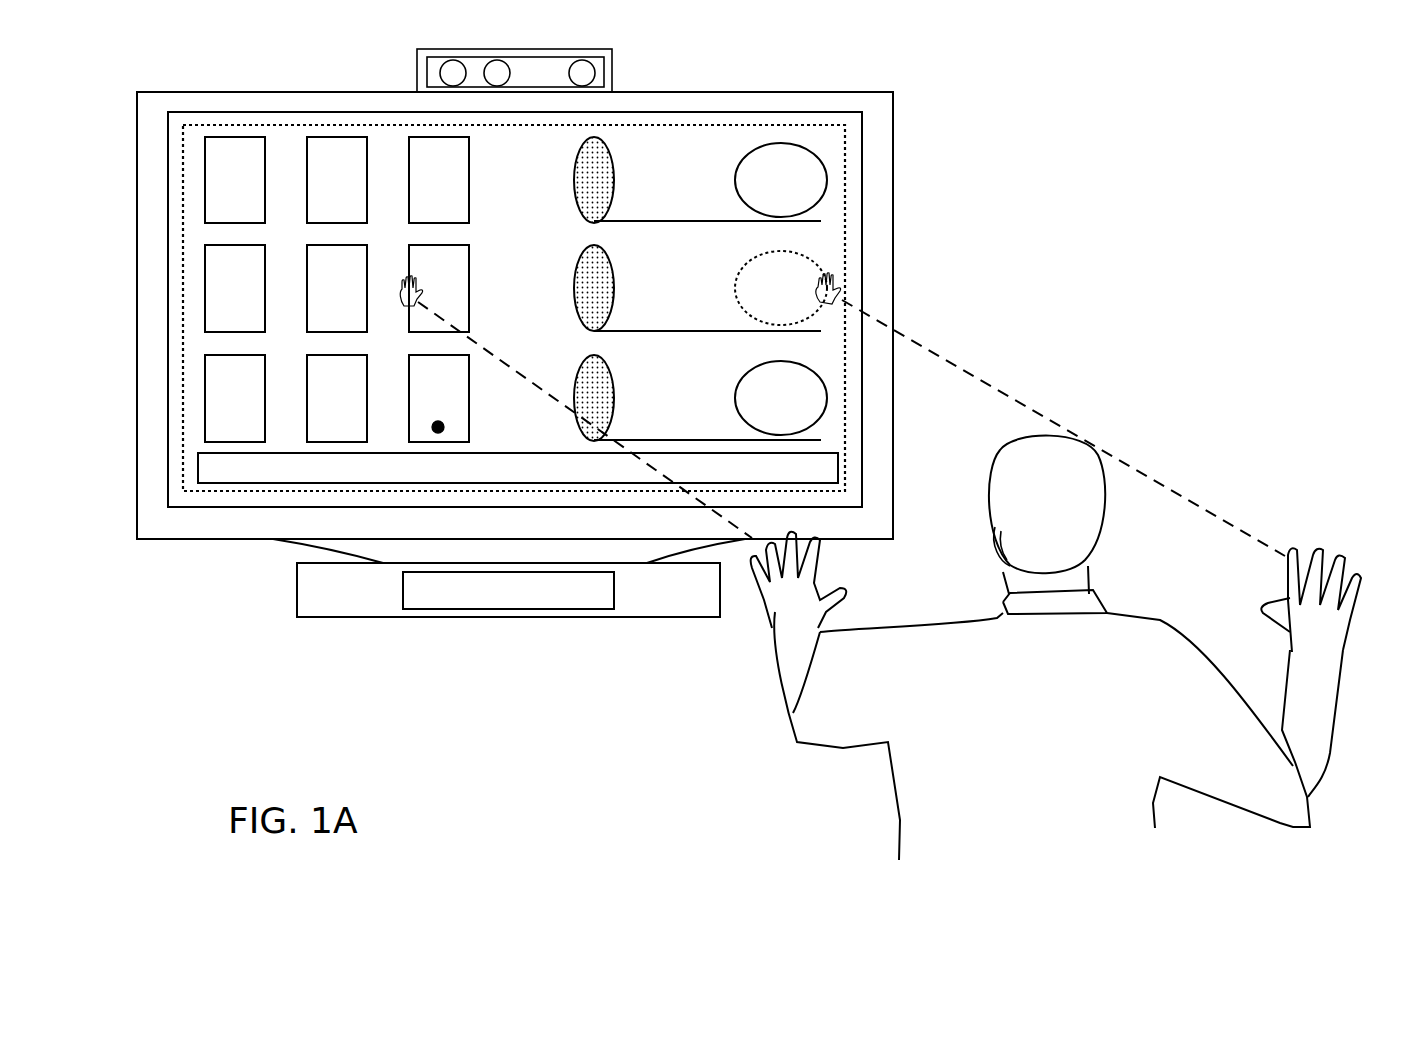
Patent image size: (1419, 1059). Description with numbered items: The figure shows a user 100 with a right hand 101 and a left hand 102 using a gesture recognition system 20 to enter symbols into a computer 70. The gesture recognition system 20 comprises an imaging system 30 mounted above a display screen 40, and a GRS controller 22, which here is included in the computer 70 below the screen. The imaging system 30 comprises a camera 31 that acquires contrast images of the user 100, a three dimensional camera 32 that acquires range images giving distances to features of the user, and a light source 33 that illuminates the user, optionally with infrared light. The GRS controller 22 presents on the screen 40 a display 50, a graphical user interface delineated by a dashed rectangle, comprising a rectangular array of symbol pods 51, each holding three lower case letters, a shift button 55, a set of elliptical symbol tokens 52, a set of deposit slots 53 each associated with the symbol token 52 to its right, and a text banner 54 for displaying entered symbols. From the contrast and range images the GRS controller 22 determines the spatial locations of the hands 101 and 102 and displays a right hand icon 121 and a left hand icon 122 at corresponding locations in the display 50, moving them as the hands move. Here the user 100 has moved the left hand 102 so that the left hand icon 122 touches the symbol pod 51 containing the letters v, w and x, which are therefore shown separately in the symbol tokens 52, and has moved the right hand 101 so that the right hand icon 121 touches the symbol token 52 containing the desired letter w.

The gesture recognition system 20 is at (1123, 145).
The GRS controller 22 is at (529, 611).
The imaging system 30 is at (417, 54).
The camera 31 is at (427, 74).
The three dimensional camera 32 is at (510, 73).
The light source 33 is at (596, 72).
The display screen 40 is at (893, 100).
The display 50 is at (848, 400).
The symbol pods 51 is at (318, 442).
The symbol tokens 52 is at (826, 164).
The deposit slots 53 is at (645, 383).
The text banner 54 is at (838, 465).
The shift button 55 is at (444, 427).
The computer 70 is at (677, 618).
The user 100 is at (1155, 435).
The right hand 101 is at (1300, 612).
The left hand 102 is at (779, 618).
The right hand icon 121 is at (842, 286).
The left hand icon 122 is at (428, 296).